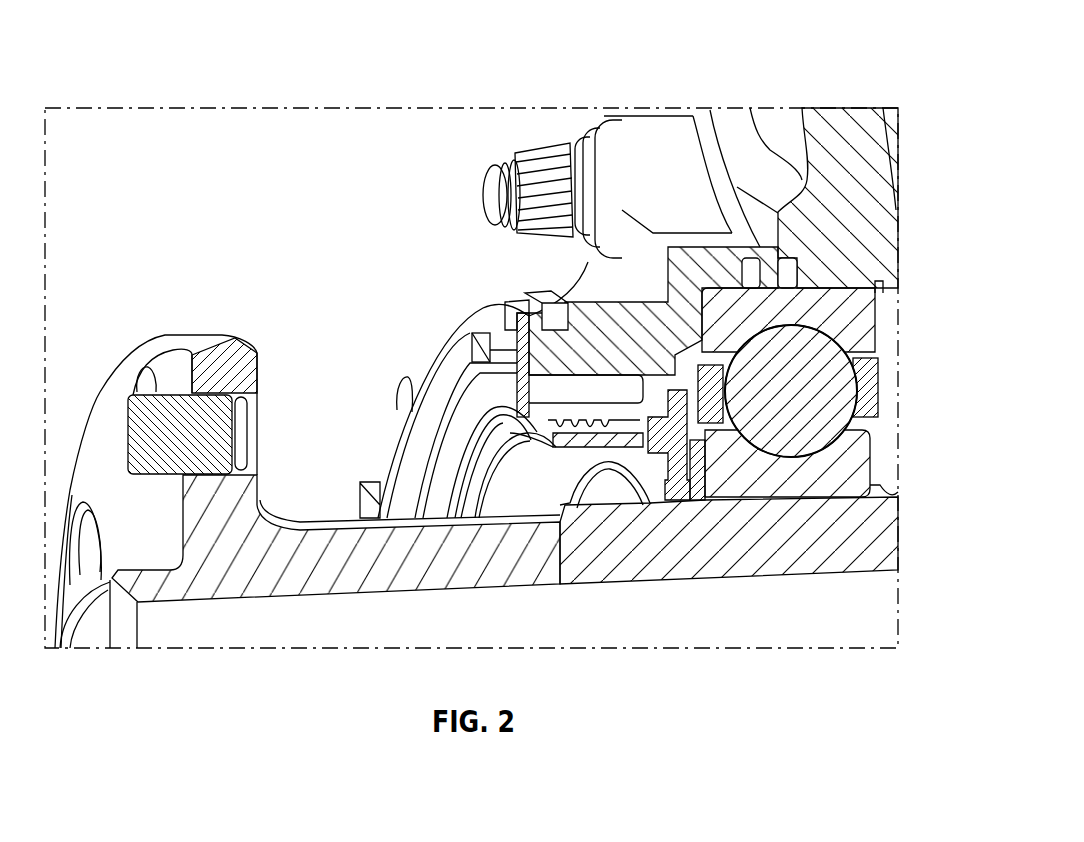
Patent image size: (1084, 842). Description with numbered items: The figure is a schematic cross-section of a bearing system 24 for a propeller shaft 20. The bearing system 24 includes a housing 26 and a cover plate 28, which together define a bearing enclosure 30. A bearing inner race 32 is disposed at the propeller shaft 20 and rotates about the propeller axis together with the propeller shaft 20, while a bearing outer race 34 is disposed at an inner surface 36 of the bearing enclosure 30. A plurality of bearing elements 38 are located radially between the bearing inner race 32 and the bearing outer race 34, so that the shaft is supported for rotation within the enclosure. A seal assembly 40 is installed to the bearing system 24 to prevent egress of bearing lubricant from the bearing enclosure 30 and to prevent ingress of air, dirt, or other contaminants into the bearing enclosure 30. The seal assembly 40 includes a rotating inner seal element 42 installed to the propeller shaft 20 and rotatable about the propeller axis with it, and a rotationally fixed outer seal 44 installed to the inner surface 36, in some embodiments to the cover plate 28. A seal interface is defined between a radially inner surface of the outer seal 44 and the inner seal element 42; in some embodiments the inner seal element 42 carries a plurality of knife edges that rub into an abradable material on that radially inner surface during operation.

The propeller shaft 20 is at (368, 565).
The bearing system 24 is at (774, 70).
The housing 26 is at (875, 218).
The cover plate 28 is at (587, 317).
The bearing enclosure 30 is at (880, 328).
The bearing inner race 32 is at (850, 455).
The bearing outer race 34 is at (872, 305).
The inner surface 36 is at (827, 287).
The bearing elements 38 is at (840, 392).
The seal assembly 40 is at (370, 325).
The inner seal element 42 is at (663, 467).
The outer seal 44 is at (548, 392).